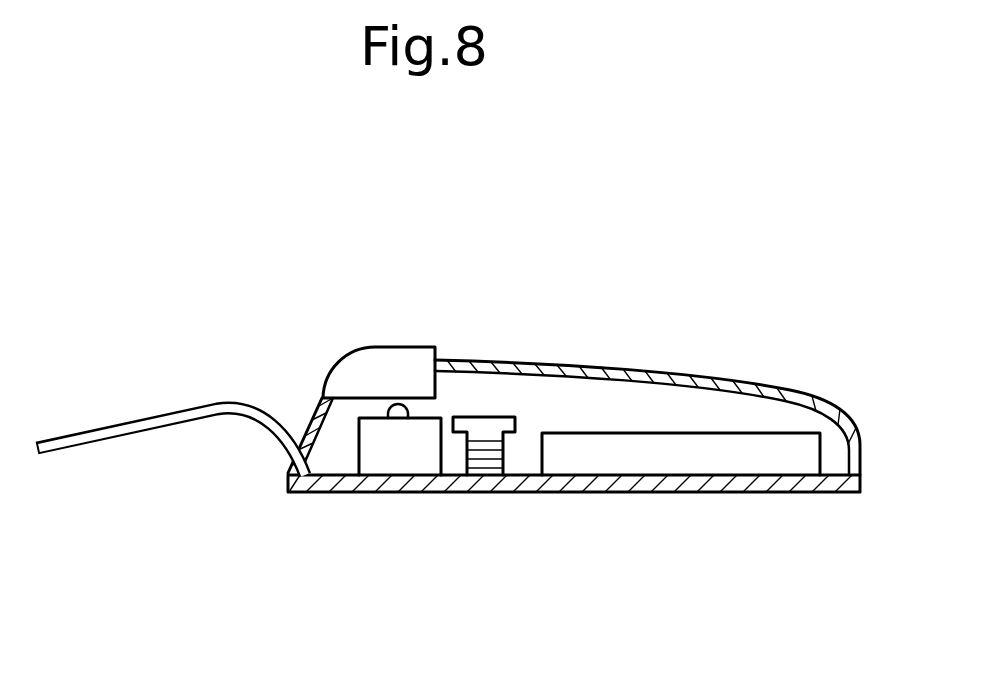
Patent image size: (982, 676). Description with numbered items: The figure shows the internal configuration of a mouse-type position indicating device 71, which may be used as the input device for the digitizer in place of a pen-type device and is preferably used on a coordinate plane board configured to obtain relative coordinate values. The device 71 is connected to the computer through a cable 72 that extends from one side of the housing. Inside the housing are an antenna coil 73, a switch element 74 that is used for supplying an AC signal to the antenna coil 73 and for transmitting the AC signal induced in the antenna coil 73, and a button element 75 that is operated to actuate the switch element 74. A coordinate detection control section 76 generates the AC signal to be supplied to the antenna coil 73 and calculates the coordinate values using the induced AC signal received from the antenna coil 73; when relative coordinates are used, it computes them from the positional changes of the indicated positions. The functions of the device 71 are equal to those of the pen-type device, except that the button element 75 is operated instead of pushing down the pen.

The mouse-type position indicating device 71 is at (641, 370).
The cable 72 is at (147, 412).
The antenna coil 73 is at (483, 458).
The switch element 74 is at (384, 458).
The button element 75 is at (380, 360).
The coordinate detection control section 76 is at (772, 445).